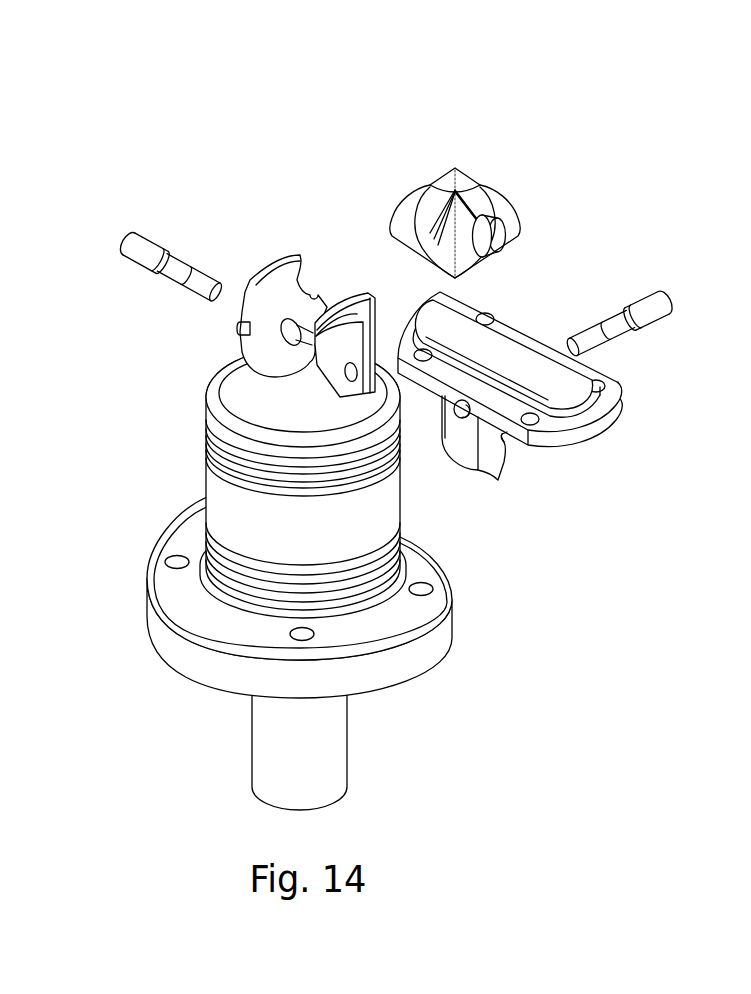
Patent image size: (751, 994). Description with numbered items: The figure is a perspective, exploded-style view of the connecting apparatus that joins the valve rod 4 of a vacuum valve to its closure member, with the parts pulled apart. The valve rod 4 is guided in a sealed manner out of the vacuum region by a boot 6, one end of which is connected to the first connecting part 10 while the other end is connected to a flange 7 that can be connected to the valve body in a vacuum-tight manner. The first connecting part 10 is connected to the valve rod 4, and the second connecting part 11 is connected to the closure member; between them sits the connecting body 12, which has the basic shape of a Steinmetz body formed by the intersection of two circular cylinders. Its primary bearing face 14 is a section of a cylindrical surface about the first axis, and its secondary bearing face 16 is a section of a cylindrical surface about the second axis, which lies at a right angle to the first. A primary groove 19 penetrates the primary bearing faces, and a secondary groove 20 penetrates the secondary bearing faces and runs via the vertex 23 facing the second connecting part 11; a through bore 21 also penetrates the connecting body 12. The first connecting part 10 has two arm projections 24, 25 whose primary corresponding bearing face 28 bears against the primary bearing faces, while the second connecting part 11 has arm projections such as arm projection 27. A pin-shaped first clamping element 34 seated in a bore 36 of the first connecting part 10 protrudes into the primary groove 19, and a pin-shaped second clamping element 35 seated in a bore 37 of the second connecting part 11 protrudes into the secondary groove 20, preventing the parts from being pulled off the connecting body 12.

The valve rod 4 is at (303, 753).
The boot 6 is at (243, 573).
The flange 7 is at (220, 673).
The first connecting part 10 is at (253, 513).
The second connecting part 11 is at (593, 418).
The connecting body 12 is at (474, 171).
The second primary bearing face 14 is at (514, 216).
The second secondary bearing face 16 is at (410, 213).
The primary groove 19 is at (475, 203).
The secondary groove 20 is at (423, 235).
The through bore 21 is at (485, 245).
The vertex 23 is at (454, 190).
The arm projection 24 is at (255, 243).
The arm projection 25 is at (343, 323).
The arm projection 27 is at (495, 478).
The primary corresponding bearing face 28 is at (271, 284).
The first clamping element 34 is at (170, 265).
The second clamping element 35 is at (627, 325).
The bore 36 is at (293, 338).
The bore 37 is at (507, 440).